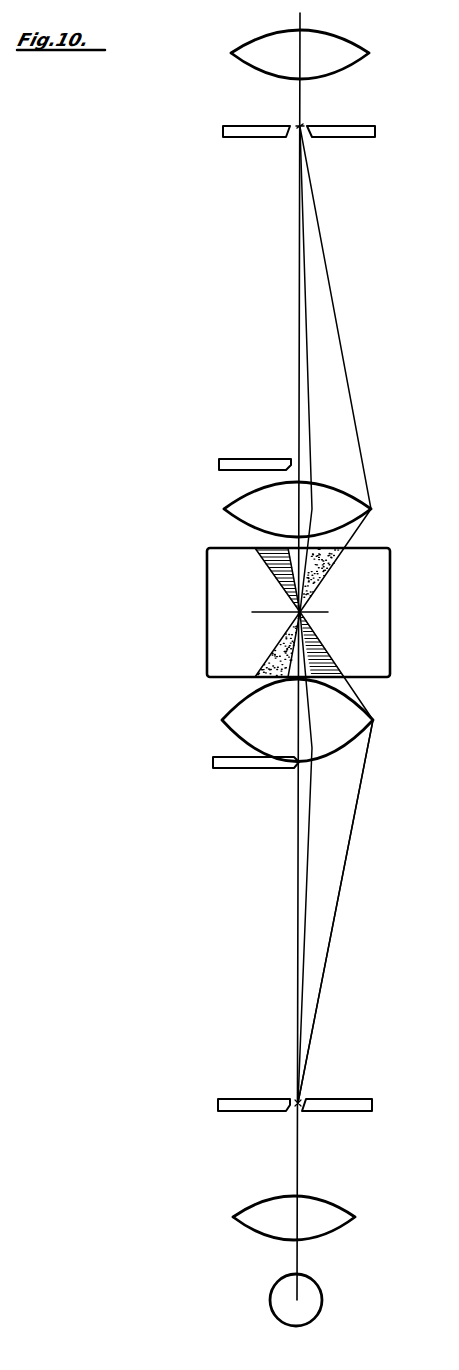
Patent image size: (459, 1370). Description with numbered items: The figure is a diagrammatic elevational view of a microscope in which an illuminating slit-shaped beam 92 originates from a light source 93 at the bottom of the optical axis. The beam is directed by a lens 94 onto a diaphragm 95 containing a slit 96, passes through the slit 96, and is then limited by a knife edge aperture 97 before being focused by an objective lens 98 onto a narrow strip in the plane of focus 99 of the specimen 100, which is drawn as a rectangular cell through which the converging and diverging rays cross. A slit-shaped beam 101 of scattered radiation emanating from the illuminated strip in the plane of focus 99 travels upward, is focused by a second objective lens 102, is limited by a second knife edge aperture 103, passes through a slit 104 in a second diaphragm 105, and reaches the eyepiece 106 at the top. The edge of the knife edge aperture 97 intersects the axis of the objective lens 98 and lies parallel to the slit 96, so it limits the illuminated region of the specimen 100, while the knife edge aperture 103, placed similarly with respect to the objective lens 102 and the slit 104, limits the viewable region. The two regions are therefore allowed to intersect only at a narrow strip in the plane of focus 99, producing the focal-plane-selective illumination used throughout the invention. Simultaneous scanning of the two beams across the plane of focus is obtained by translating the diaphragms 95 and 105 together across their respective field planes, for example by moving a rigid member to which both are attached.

The illuminating slit-shaped beam 92 is at (347, 794).
The light source 93 is at (316, 1280).
The lens 94 is at (338, 1206).
The diaphragm 95 is at (362, 1100).
The slit 96 is at (300, 1105).
The knife edge aperture 97 is at (291, 770).
The objective lens 98 is at (373, 720).
The plane of focus 99 is at (326, 611).
The specimen 100 is at (390, 628).
The slit-shaped beam 101 is at (318, 277).
The objective lens 102 is at (371, 509).
The knife edge aperture 103 is at (234, 460).
The slit 104 is at (303, 126).
The diaphragm 105 is at (340, 137).
The eyepiece 106 is at (350, 43).